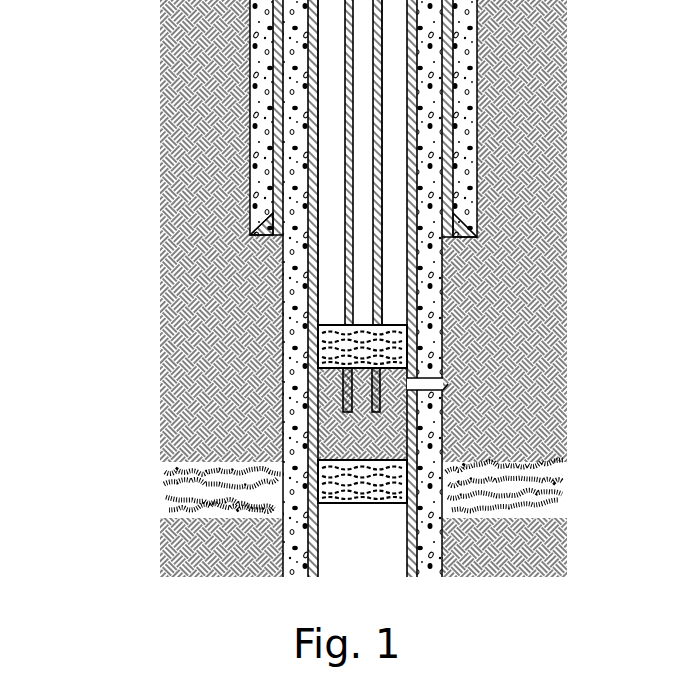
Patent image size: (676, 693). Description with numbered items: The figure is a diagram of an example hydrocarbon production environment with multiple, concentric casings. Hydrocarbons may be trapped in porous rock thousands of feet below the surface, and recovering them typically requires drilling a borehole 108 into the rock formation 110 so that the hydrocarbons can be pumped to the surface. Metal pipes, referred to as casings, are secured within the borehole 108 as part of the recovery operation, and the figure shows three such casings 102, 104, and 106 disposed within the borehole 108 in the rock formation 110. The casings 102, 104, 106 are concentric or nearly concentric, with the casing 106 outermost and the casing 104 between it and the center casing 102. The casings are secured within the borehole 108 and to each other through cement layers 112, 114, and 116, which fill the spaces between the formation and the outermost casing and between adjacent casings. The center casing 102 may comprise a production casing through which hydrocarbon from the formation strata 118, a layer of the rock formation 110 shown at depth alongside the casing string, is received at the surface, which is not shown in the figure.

The casing 102 is at (350, 314).
The casing 104 is at (312, 200).
The casing 106 is at (280, 57).
The borehole 108 is at (472, 192).
The rock formation 110 is at (530, 68).
The cement layer 112 is at (327, 267).
The cement layer 114 is at (295, 117).
The cement layer 116 is at (262, 16).
The formation strata 118 is at (528, 420).